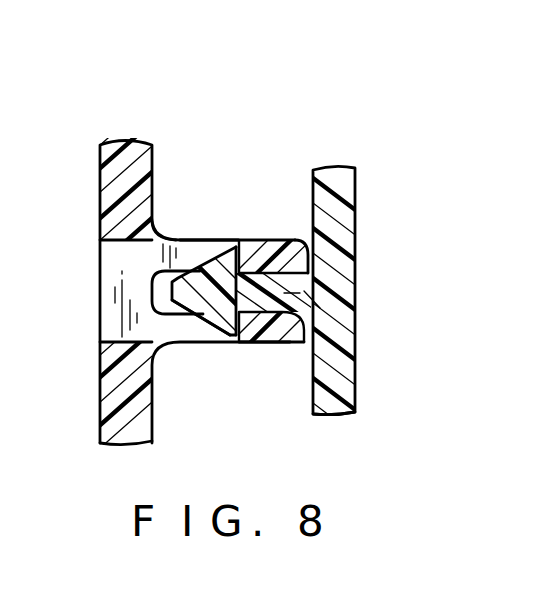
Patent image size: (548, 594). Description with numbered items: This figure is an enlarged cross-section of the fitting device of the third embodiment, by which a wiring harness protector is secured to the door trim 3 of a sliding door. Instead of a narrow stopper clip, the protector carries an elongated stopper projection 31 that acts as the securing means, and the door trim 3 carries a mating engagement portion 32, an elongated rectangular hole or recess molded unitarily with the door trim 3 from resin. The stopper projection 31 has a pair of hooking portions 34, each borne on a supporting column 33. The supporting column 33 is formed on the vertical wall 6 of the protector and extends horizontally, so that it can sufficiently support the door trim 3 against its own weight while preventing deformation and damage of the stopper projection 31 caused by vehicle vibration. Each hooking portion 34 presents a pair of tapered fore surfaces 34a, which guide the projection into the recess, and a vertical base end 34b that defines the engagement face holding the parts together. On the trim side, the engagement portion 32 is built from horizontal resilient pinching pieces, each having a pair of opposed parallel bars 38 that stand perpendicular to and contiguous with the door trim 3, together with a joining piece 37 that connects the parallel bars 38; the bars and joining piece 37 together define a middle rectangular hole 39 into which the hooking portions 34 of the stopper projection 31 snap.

The door trim 3 is at (103, 146).
The vertical wall 6 is at (351, 187).
The stopper projection 31 is at (206, 249).
The engagement portion 32 is at (262, 232).
The supporting column 33 is at (340, 415).
The hooking portion 34 is at (223, 343).
The tapered fore surface 34a is at (196, 318).
The vertical base end 34b is at (260, 343).
The joining piece 37 is at (289, 241).
The parallel bar 38 is at (195, 240).
The middle rectangular hole 39 is at (180, 242).